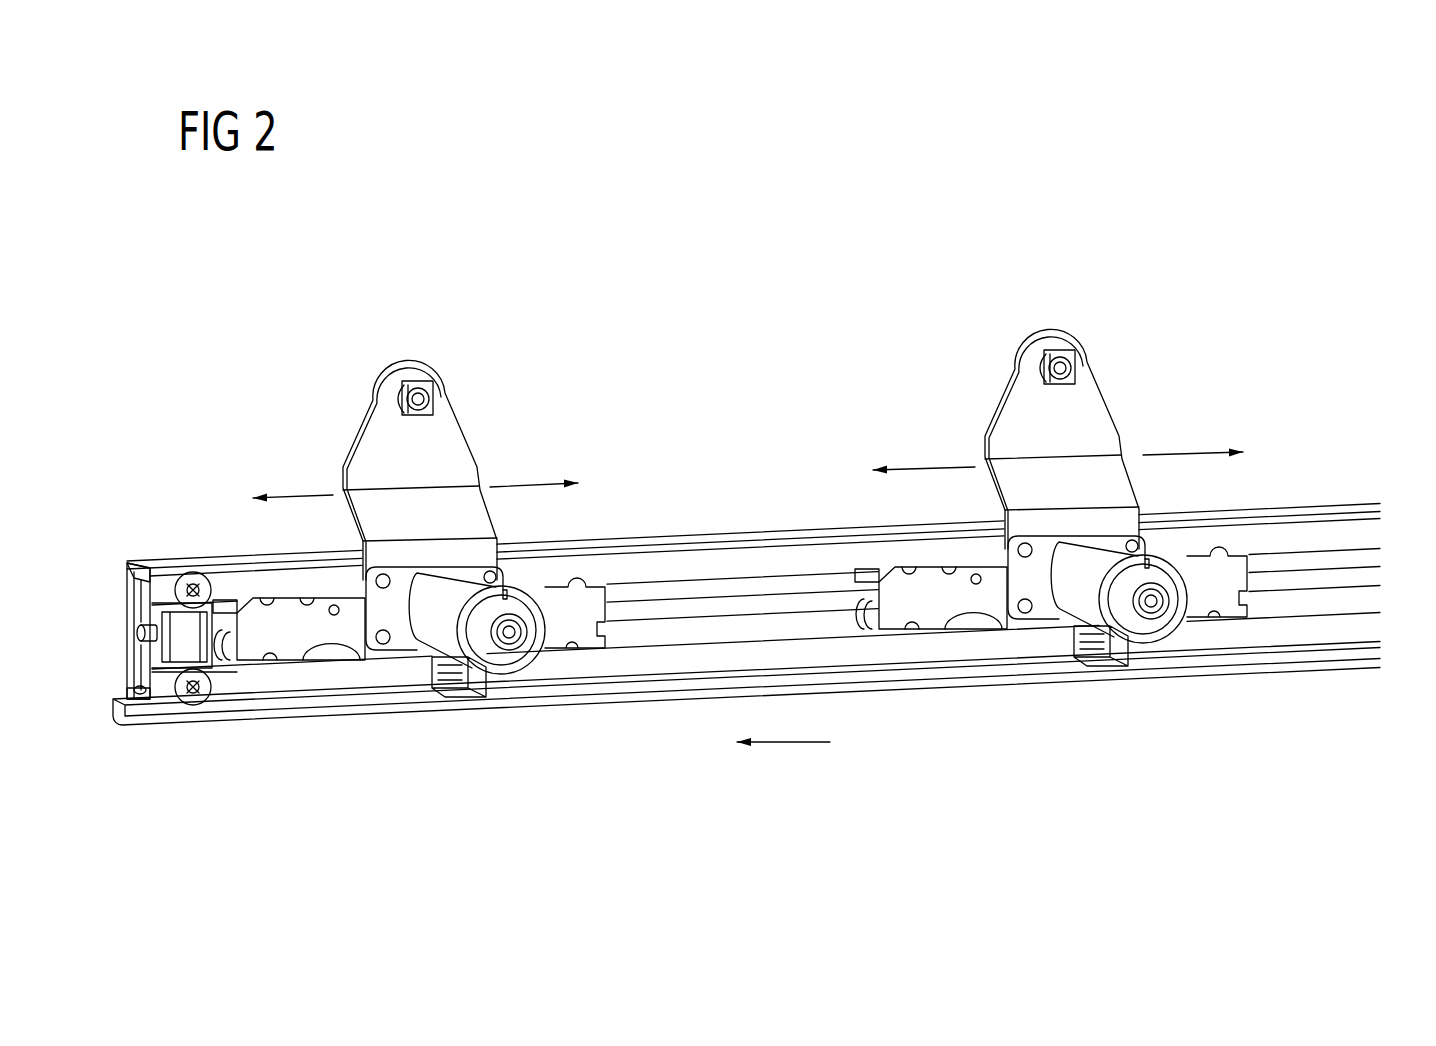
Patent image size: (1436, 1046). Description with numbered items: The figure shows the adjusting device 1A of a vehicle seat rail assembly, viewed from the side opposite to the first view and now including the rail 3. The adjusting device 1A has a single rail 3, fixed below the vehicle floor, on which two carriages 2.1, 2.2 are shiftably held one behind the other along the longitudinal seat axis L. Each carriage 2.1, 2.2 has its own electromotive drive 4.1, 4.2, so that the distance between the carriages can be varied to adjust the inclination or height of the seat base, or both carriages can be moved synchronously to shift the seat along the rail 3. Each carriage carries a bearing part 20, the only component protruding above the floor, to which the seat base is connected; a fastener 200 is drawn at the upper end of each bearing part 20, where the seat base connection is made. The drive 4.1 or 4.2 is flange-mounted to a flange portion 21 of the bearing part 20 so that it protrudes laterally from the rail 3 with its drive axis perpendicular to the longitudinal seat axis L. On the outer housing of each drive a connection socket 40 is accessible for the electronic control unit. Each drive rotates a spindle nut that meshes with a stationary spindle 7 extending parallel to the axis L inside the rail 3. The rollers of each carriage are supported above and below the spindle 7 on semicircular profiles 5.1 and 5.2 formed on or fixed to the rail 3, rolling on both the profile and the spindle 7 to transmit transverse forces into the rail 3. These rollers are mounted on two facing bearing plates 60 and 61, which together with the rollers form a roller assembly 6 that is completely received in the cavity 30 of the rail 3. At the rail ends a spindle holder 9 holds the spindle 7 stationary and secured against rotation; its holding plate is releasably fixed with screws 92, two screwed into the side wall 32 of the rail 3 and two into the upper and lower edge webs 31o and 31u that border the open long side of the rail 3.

The adjusting device 1A is at (1362, 683).
The carriage 2.1 is at (452, 370).
The carriage 2.2 is at (1118, 345).
The rail 3 is at (1360, 505).
The electromotive drive 4.1 is at (510, 680).
The electromotive drive 4.2 is at (1155, 645).
The semicircular profile 5.1 is at (133, 566).
The semicircular profile 5.2 is at (146, 693).
The roller assembly 6 is at (254, 660).
The spindle 7 is at (1368, 578).
The spindle holder 9 is at (140, 655).
The bearing part 20 is at (368, 398).
The flange portion 21 is at (366, 650).
The cavity 30 is at (1368, 600).
The upper edge web 31o is at (618, 562).
The lower edge web 31u is at (623, 665).
The side wall 32 is at (128, 607).
The connection socket 40 is at (468, 697).
The bearing plate 60 is at (238, 603).
The bearing plate 61 is at (288, 655).
The screw 92 is at (174, 590).
The fastener 200 is at (409, 383).
The longitudinal seat axis L is at (783, 754).